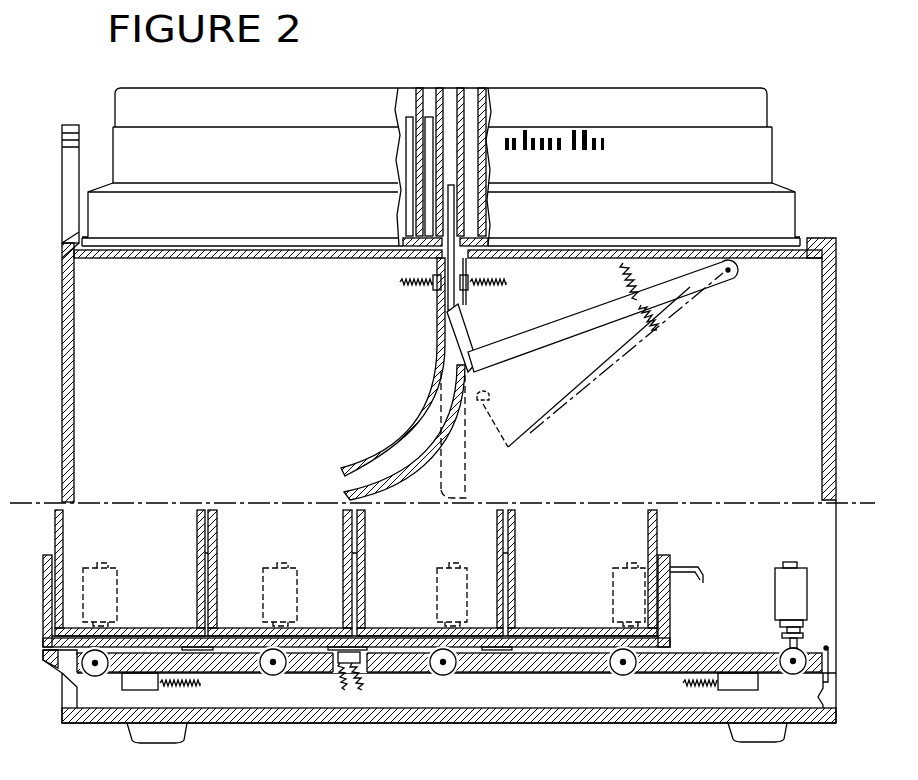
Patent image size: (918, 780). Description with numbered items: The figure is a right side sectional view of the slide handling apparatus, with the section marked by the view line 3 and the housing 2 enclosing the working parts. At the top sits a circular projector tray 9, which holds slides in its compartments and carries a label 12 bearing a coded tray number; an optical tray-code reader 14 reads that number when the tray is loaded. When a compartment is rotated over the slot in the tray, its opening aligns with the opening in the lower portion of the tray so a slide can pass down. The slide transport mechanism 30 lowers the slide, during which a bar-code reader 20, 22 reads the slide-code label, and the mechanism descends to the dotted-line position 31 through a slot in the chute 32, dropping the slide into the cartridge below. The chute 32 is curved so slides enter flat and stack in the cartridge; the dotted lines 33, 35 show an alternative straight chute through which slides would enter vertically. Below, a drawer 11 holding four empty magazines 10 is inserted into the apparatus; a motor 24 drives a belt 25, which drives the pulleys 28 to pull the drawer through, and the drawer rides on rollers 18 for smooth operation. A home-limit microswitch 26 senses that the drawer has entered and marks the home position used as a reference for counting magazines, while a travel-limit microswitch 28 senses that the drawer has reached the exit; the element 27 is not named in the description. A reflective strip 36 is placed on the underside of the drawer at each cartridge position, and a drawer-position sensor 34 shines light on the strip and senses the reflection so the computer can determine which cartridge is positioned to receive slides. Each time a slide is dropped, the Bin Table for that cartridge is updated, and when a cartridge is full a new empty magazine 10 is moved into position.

The housing 2 is at (62, 337).
The section line 3- 3 is at (28, 500).
The projector tray 9 is at (113, 128).
The magazine 10 is at (55, 524).
The drawer 11 is at (43, 588).
The label 12 is at (622, 142).
The optical tray-code reader 14 is at (62, 140).
The rollers 18 is at (273, 676).
The bar-code reader 20 is at (430, 272).
The bar-code reader 22 is at (480, 272).
The motor 24 is at (778, 580).
The belt 25 is at (695, 632).
The home-limit microswitch 26 is at (132, 690).
The actuator 27 is at (730, 690).
The travel-limit microswitch 28 is at (262, 590).
The slide transport mechanism 30 is at (578, 325).
The lowered position 31 is at (638, 347).
The chute 32 is at (462, 306).
The straight chute 33 is at (467, 470).
The drawer-position sensor 34 is at (347, 691).
The straight chute 35 is at (470, 498).
The reflective strip 36 is at (318, 673).